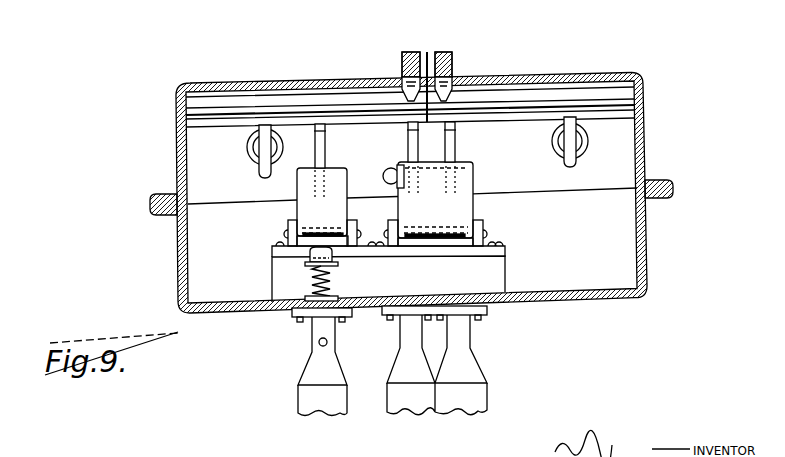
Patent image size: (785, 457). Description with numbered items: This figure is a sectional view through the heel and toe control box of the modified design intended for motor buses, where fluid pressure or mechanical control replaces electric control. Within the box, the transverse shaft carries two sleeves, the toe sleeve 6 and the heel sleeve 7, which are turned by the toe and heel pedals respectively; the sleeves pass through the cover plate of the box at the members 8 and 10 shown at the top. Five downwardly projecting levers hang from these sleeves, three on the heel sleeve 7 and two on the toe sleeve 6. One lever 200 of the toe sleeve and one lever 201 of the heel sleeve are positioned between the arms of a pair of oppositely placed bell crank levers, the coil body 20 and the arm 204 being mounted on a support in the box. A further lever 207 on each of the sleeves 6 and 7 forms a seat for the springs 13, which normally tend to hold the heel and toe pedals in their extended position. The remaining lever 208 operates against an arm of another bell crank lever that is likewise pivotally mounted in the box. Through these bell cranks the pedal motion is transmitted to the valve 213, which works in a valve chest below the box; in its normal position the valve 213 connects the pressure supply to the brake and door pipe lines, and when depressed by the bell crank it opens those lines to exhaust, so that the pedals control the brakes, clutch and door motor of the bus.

The toe sleeve 6 is at (531, 93).
The heel sleeve 7 is at (258, 104).
The terminal 8 is at (400, 62).
The terminal 10 is at (452, 58).
The spring 13 is at (257, 153).
The electromagnet coil 20 is at (298, 212).
The lever of the toe sleeve 200 is at (455, 140).
The lever of the heel sleeve 201 is at (408, 140).
The arm of bell crank lever 204 is at (474, 203).
The lever 207 is at (270, 181).
The lever 208 is at (325, 152).
The valve 213 is at (310, 400).